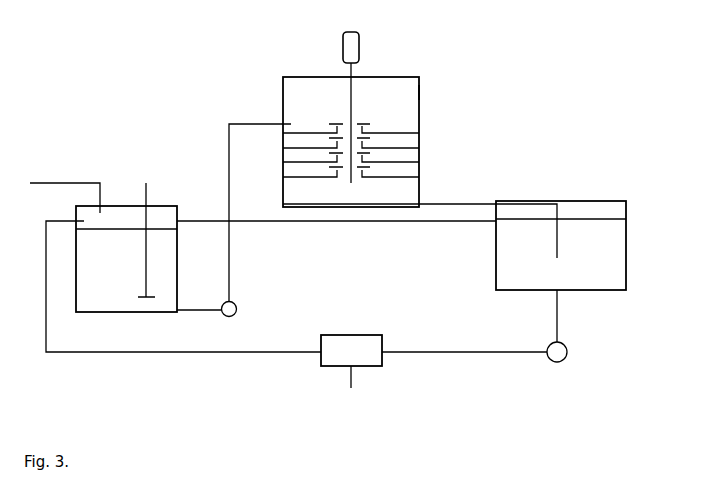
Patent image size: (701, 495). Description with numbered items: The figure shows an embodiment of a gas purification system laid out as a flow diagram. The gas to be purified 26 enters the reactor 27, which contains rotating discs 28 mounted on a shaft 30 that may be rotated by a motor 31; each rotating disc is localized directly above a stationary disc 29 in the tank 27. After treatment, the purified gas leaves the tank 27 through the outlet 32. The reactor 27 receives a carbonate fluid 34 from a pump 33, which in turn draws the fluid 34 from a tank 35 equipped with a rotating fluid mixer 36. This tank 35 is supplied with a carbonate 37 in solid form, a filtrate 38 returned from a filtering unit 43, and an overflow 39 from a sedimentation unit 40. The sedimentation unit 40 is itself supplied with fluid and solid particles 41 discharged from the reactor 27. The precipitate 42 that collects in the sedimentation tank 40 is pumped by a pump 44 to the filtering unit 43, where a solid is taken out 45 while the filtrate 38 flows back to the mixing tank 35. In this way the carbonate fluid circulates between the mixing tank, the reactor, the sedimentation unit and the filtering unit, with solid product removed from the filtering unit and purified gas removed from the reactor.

The gas to be purified 26 is at (352, 196).
The reactor 27 is at (338, 142).
The rotating discs 28 is at (351, 136).
The disc 29 is at (351, 147).
The shaft 30 is at (361, 123).
The motor 31 is at (362, 47).
The purified gas outlet 32 is at (412, 93).
The pump 33 is at (217, 310).
The carbonate fluid 34 is at (242, 212).
The tank 35 is at (126, 259).
The rotating fluid mixer 36 is at (141, 240).
The carbonate in solid form 37 is at (65, 188).
The filtrate 38 is at (171, 286).
The overflow 39 is at (336, 231).
The sedimentation unit 40 is at (573, 245).
The fluid/solid particles 41 is at (488, 212).
The precipitate 42 is at (568, 316).
The filtering unit 43 is at (351, 350).
The pump 44 is at (474, 364).
The solid taken out 45 is at (348, 387).